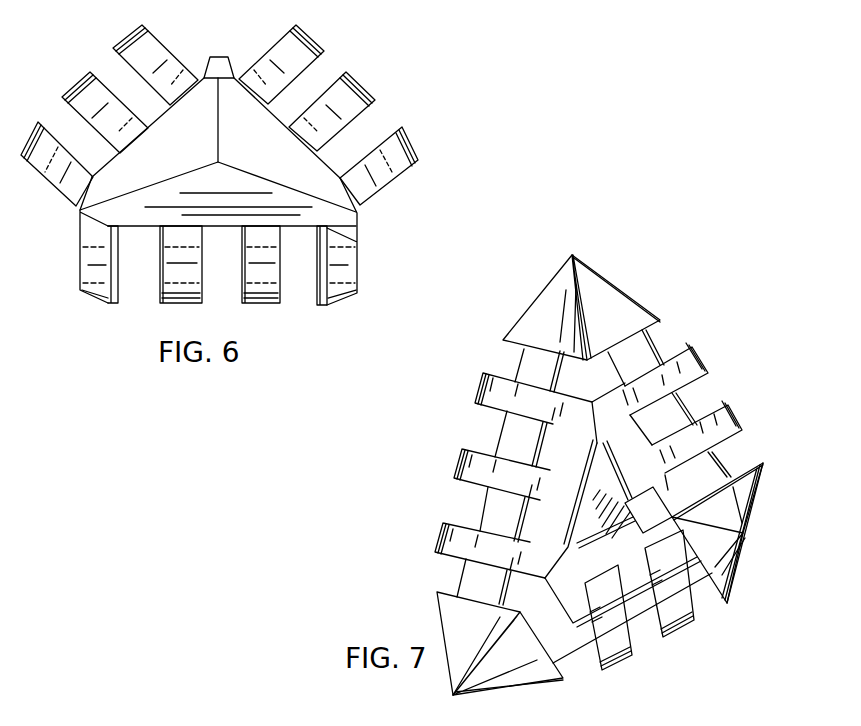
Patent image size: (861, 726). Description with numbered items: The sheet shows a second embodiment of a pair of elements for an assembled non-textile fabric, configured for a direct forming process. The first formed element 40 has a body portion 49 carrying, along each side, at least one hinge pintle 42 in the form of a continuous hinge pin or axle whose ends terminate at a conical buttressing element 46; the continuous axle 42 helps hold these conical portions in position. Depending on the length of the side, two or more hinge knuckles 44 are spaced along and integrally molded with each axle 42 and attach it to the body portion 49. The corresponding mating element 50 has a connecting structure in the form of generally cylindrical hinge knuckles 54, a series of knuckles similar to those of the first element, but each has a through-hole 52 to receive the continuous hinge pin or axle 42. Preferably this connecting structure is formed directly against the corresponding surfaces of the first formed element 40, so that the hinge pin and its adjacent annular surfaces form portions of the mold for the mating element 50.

In FIG. 7, the first formed element 40 is at (727, 332).
In FIG. 7, the hinge pintle 42 is at (540, 370).
In FIG. 7, the hinge knuckle 44 is at (488, 400).
In FIG. 7, the conical buttressing element 46 is at (555, 308).
In FIG. 7, the body portion 49 is at (545, 540).
In FIG. 6, the mating element 50 is at (441, 88).
In FIG. 6, the through-hole 52 is at (262, 306).
In FIG. 6, the hinge knuckle 54 is at (404, 126).